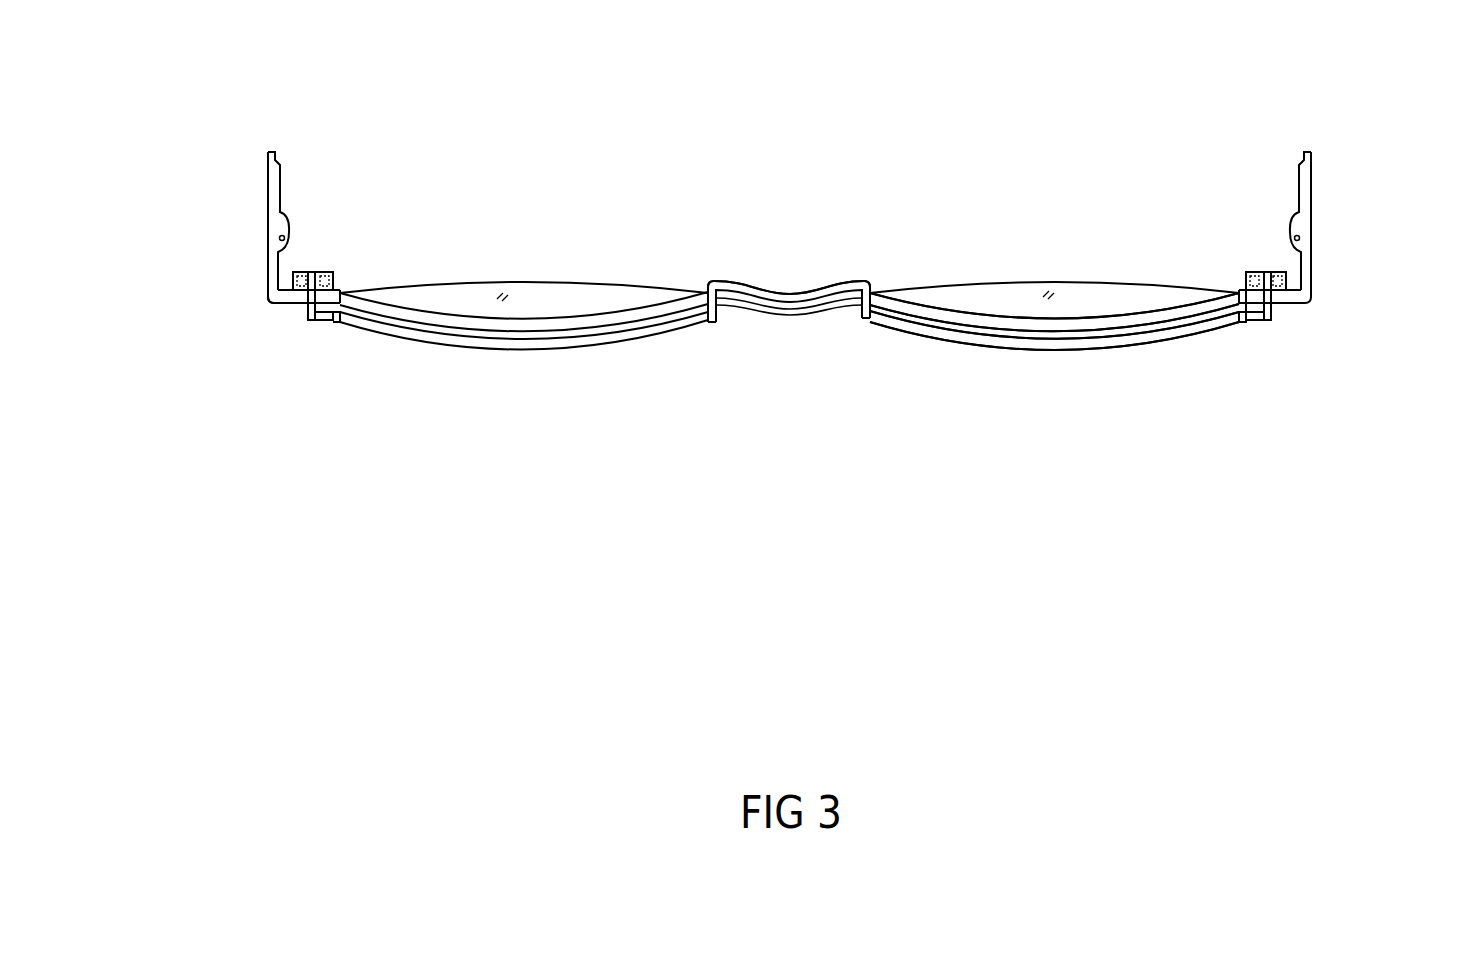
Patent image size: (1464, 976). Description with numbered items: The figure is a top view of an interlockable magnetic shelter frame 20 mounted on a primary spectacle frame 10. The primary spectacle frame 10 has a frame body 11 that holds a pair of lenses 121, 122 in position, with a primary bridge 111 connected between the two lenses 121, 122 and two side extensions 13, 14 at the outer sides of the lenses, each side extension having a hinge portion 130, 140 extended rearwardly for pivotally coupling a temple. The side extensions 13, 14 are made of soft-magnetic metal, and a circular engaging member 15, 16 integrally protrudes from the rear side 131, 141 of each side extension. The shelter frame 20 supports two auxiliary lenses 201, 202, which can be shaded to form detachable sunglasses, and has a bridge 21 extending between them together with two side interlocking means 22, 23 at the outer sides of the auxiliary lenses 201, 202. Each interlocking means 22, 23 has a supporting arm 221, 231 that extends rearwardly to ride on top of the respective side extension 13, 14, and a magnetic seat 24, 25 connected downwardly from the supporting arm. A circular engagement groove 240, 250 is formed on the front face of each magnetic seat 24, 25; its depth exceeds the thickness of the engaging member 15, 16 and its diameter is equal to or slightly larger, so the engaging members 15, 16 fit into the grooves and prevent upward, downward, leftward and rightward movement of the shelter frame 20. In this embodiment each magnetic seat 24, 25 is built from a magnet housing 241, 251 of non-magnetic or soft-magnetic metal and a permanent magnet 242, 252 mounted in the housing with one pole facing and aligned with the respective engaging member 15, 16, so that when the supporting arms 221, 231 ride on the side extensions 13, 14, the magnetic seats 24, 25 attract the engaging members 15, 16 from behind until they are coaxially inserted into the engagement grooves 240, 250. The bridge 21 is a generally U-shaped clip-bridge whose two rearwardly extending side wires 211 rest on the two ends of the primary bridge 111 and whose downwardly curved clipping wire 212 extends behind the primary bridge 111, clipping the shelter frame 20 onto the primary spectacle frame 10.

The primary spectacle frame 10 is at (1060, 272).
The frame body 11 is at (918, 312).
The primary bridge 111 is at (789, 307).
The lens 121 is at (1002, 302).
The lens 122 is at (472, 306).
The side extension 13 is at (1272, 303).
The hinge portion 130 is at (1304, 232).
The rear side 131 is at (1235, 268).
The side extension 14 is at (312, 320).
The hinge portion 140 is at (278, 238).
The rear side 141 is at (345, 273).
The engaging member 15 is at (1255, 292).
The engaging member 16 is at (292, 303).
The shelter frame 20 is at (1143, 370).
The auxiliary lens 201 is at (1082, 333).
The auxiliary lens 202 is at (562, 332).
The bridge 21 is at (737, 280).
The side wire 211 is at (706, 294).
The clipping wire 212 is at (794, 292).
The side interlocking means 22 is at (1267, 337).
The supporting arm 221 is at (1275, 310).
The side interlocking means 23 is at (340, 353).
The supporting arm 231 is at (327, 322).
The magnetic seat 24 is at (1269, 267).
The engagement groove 240 is at (1287, 300).
The magnet housing 241 is at (1291, 274).
The permanent magnet 242 is at (1251, 267).
The magnetic seat 25 is at (314, 272).
The engagement groove 250 is at (325, 270).
The magnet housing 251 is at (298, 272).
The permanent magnet 252 is at (293, 290).